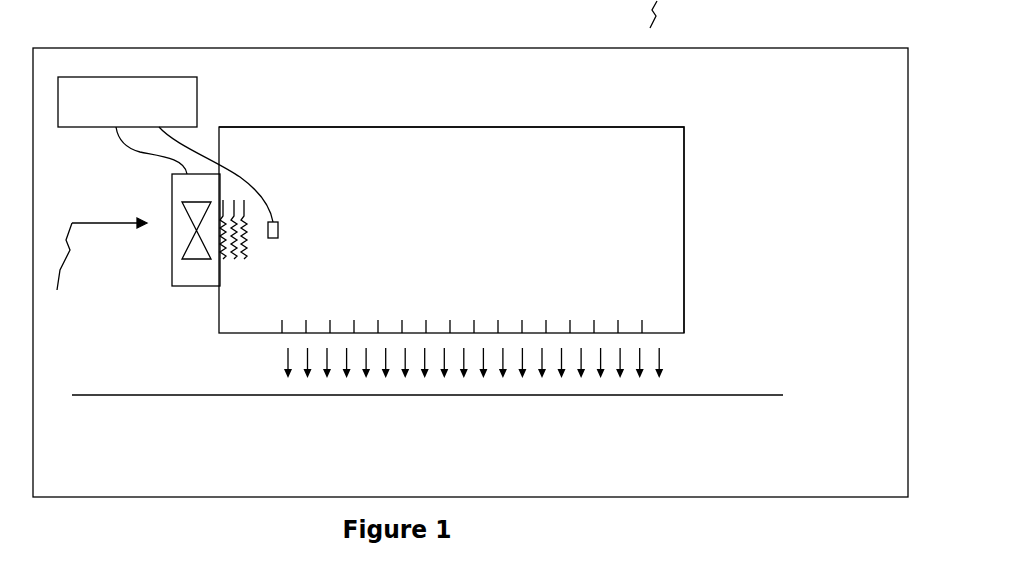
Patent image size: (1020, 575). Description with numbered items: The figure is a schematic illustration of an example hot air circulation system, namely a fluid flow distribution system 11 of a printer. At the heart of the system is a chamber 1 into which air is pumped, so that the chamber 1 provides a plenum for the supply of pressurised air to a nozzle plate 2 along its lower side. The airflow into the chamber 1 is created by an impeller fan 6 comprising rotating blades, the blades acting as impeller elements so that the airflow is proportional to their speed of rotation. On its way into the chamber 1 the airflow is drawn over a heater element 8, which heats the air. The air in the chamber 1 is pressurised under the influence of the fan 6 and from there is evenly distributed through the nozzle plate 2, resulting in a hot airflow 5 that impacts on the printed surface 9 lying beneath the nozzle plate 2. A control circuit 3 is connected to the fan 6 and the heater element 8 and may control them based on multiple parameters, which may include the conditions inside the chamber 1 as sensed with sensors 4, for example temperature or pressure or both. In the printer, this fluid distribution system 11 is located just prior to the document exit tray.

The chamber 1 is at (446, 241).
The nozzle plate 2 is at (594, 319).
The control circuit 3 is at (121, 109).
The sensors 4 is at (276, 239).
The hot airflow 5 is at (666, 357).
The impeller fan 6 is at (172, 286).
The heater element 8 is at (250, 260).
The printed surface 9 is at (140, 396).
The fluid flow distribution system 11 is at (692, 113).